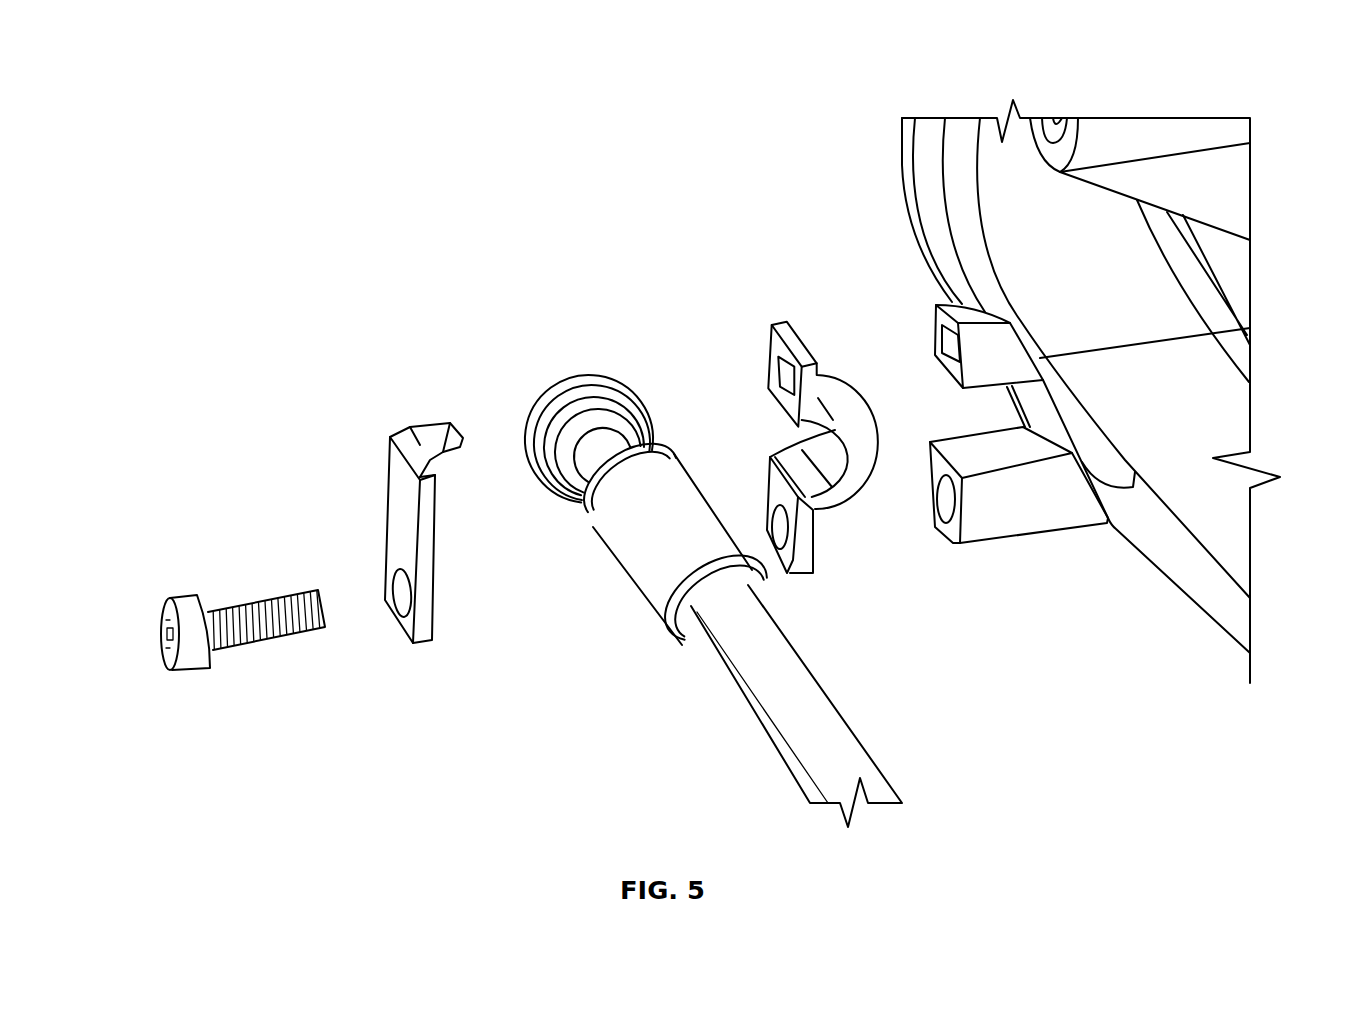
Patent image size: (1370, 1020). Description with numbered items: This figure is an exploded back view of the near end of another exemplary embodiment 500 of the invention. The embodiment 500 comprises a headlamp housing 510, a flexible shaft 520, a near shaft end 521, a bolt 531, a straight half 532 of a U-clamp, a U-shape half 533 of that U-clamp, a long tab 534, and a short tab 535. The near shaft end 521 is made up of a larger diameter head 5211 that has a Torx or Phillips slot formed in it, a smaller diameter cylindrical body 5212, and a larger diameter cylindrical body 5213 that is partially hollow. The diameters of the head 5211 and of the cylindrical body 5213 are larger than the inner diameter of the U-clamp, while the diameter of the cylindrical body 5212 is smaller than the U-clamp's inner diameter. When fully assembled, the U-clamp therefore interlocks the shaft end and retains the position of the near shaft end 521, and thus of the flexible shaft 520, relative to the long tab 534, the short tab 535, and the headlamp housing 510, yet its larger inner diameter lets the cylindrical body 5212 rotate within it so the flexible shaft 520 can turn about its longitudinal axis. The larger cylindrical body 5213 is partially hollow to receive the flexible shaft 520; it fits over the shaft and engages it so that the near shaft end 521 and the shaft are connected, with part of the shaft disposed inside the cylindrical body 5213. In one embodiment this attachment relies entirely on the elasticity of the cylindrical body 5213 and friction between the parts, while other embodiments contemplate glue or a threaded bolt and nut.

The embodiment 500 is at (390, 178).
The headlamp housing 510 is at (1115, 222).
The flexible shaft 520 is at (838, 758).
The near shaft end 521 is at (641, 509).
The larger diameter head 5211 is at (560, 393).
The smaller diameter cylindrical body 5212 is at (617, 440).
The larger diameter cylindrical body 5213 is at (663, 498).
The bolt 531 is at (202, 583).
The straight half of U-clamp 532 is at (398, 648).
The U-shape half of U-clamp 533 is at (793, 312).
The long tab 534 is at (1018, 490).
The short tab 535 is at (1008, 358).